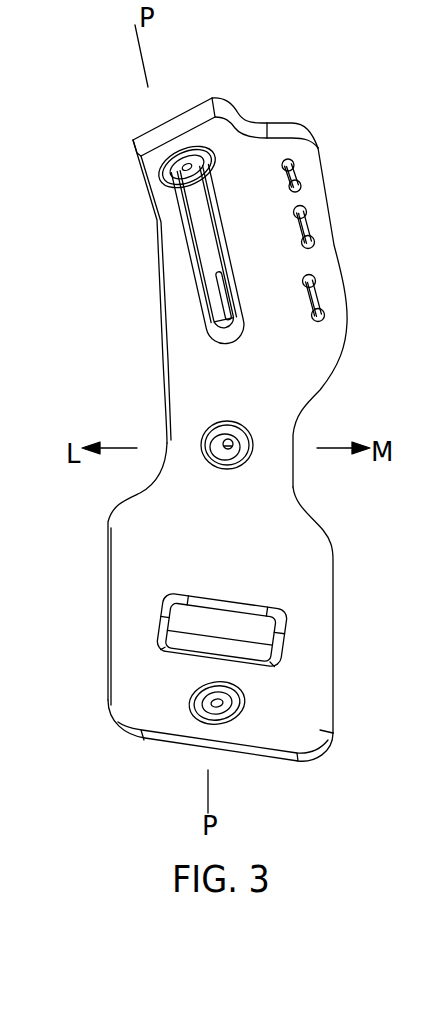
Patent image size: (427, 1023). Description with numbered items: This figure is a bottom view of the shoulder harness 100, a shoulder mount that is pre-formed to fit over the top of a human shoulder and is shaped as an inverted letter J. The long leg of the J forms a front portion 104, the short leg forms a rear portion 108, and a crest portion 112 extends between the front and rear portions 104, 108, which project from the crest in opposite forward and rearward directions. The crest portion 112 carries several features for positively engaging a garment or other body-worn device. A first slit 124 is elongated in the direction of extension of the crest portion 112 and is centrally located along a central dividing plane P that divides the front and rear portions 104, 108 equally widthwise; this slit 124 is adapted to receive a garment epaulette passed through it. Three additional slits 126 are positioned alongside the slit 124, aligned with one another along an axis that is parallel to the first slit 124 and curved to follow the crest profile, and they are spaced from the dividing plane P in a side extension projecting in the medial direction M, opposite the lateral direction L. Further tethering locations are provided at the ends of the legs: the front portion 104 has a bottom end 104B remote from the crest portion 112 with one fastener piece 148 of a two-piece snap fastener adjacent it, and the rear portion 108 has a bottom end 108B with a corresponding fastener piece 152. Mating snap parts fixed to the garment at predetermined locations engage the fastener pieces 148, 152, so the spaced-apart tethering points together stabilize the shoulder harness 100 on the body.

The shoulder harness 100 is at (318, 88).
The front portion 104 is at (358, 681).
The bottom end of the front portion 104B is at (320, 730).
The rear portion 108 is at (96, 146).
The bottom end of the rear portion 108B is at (168, 142).
The crest portion 112 is at (126, 295).
The slit 124 is at (190, 232).
The additional slit 126 is at (296, 171).
The fastener piece 148 is at (220, 720).
The fastener piece 152 is at (190, 157).